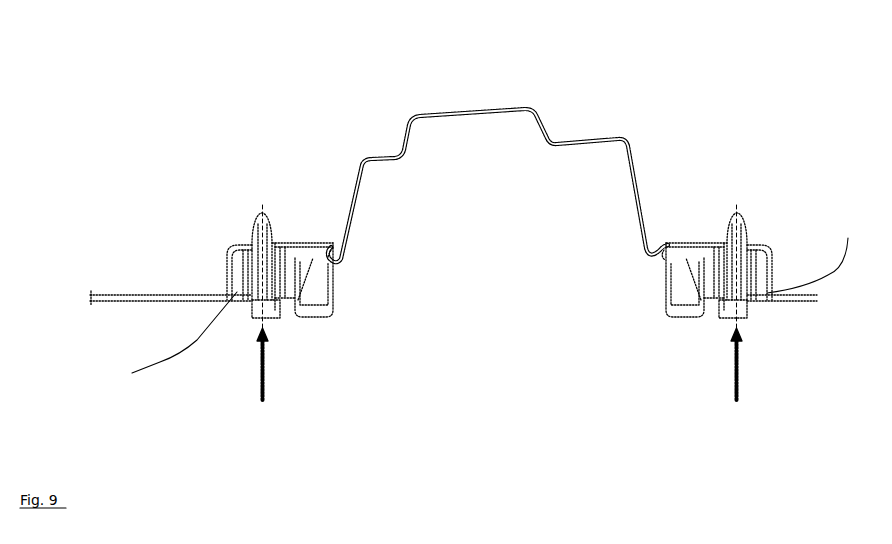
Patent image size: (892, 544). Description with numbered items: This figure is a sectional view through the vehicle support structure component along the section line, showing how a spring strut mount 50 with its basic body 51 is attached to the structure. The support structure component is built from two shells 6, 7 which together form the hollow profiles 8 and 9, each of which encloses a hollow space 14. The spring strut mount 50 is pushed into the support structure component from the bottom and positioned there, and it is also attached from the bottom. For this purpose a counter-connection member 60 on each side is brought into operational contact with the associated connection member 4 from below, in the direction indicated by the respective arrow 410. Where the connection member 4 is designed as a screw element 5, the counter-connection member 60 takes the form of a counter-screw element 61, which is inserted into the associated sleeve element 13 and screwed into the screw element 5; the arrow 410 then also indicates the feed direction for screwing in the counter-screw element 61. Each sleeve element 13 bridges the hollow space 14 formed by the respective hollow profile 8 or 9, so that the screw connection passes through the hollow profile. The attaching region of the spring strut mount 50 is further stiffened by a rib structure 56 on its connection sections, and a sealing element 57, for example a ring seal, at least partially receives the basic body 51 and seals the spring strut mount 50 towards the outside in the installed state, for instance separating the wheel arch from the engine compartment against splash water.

The connection member 4 is at (497, 247).
The screw element 5 is at (252, 233).
The shell 6 is at (152, 302).
The shell 7 is at (230, 253).
The hollow profile 8 is at (711, 258).
The hollow profile 9 is at (288, 256).
The sleeve element 13 is at (242, 274).
The hollow space 14 is at (484, 302).
The spring strut mount 50 is at (553, 123).
The basic body 51 is at (626, 138).
The rib structure 56 is at (322, 298).
The sealing element 57 is at (330, 253).
The counter-connection member 60 is at (257, 285).
The counter-screw element 61 is at (257, 312).
The arrow 410 is at (267, 380).